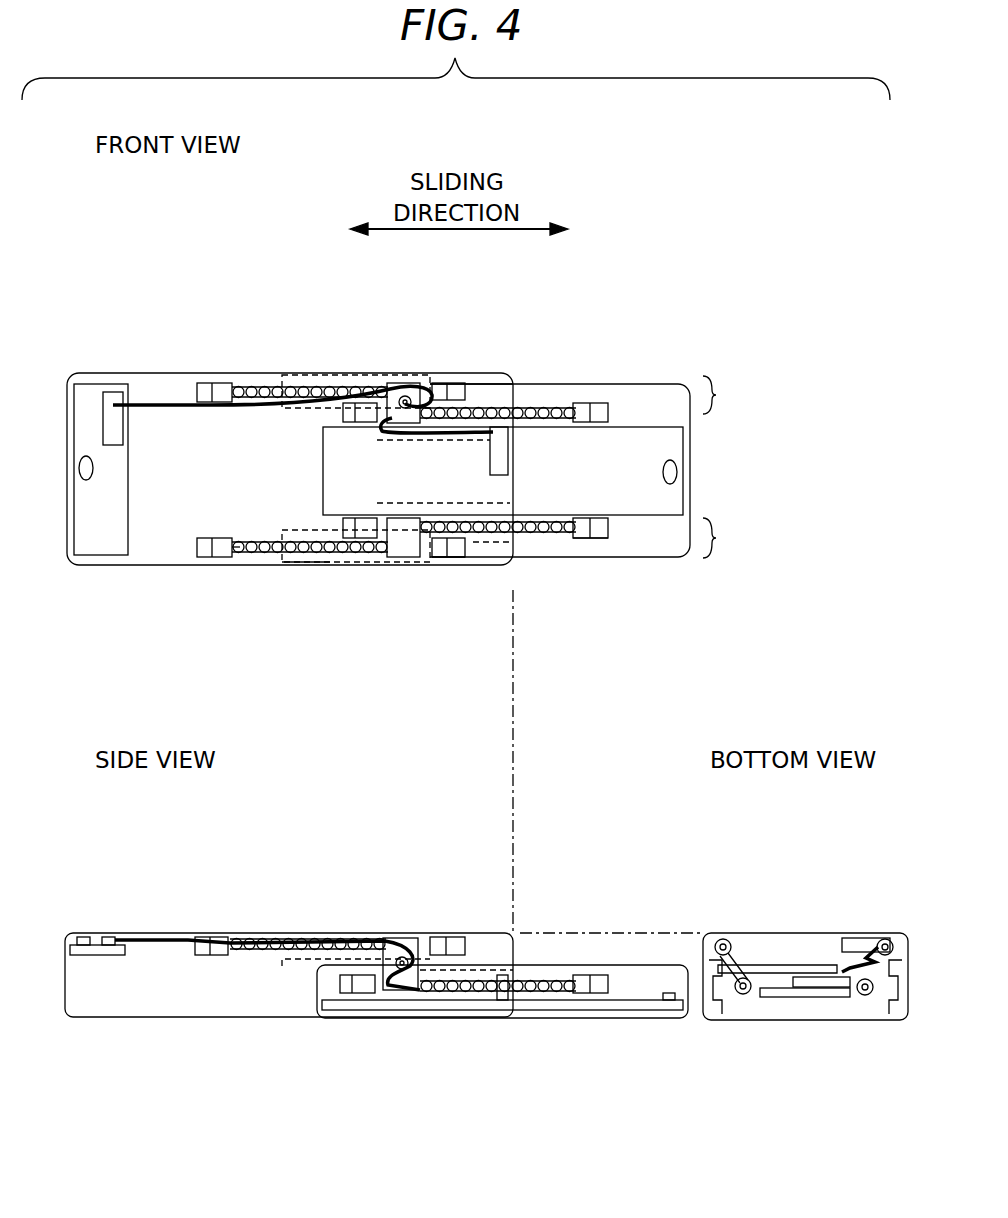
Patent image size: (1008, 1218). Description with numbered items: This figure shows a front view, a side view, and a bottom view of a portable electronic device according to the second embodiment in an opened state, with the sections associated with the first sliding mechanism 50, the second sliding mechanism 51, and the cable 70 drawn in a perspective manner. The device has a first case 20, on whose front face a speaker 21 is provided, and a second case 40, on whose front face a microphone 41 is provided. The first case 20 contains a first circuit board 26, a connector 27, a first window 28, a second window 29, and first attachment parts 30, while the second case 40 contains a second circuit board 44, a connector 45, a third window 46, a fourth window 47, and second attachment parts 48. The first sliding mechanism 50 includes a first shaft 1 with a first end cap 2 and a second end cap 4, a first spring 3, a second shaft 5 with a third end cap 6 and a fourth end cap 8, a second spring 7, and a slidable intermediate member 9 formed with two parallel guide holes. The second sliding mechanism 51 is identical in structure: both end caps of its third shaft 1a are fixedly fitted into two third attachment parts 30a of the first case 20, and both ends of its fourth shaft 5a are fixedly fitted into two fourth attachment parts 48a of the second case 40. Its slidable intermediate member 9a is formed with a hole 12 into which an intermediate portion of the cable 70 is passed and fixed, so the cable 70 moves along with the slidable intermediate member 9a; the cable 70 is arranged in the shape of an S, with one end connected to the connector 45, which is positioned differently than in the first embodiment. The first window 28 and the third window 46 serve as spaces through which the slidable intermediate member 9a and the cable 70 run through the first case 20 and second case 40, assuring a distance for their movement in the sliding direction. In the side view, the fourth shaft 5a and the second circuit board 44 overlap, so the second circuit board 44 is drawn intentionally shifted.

The first shaft 1 is at (341, 558).
The third shaft 1a is at (262, 385).
The first end cap 2 is at (218, 558).
The first spring 3 is at (308, 561).
The second end cap 4 is at (443, 558).
The second shaft 5 is at (578, 540).
The fourth shaft 5a is at (548, 407).
The third end cap 6 is at (593, 540).
The second spring 7 is at (541, 540).
The fourth end cap 8 is at (358, 527).
The slidable intermediate member 9 is at (405, 560).
The slidable intermediate member 9a is at (395, 383).
The hole 12 is at (406, 396).
The first case 20 is at (77, 373).
The speaker 21 is at (94, 468).
The first circuit board 26 is at (88, 384).
The connector 27 is at (108, 392).
The first window 28 is at (363, 376).
The second window 29 is at (294, 530).
The first attachment parts 30 is at (210, 538).
The third attachment parts 30a is at (210, 383).
The second case 40 is at (687, 384).
The microphone 41 is at (677, 470).
The second circuit board 44 is at (545, 428).
The connector 45 is at (508, 465).
The third window 46 is at (488, 384).
The fourth window 47 is at (493, 493).
The second attachment parts 48 is at (344, 533).
The fourth attachment parts 48a is at (598, 403).
The first sliding mechanism 50 is at (720, 947).
The second sliding mechanism 51 is at (890, 945).
The cable 70 is at (170, 410).